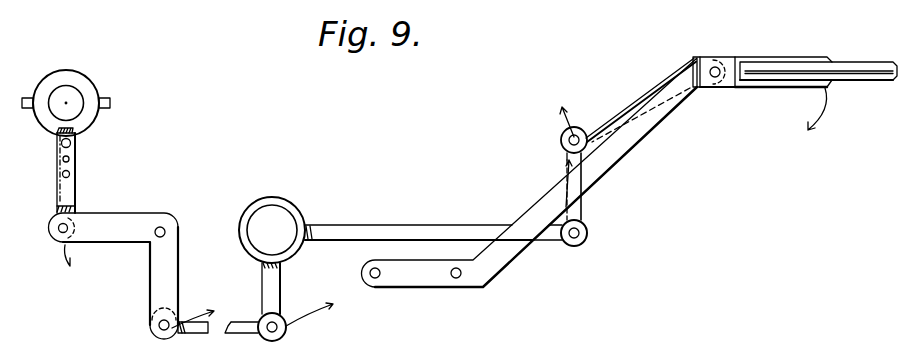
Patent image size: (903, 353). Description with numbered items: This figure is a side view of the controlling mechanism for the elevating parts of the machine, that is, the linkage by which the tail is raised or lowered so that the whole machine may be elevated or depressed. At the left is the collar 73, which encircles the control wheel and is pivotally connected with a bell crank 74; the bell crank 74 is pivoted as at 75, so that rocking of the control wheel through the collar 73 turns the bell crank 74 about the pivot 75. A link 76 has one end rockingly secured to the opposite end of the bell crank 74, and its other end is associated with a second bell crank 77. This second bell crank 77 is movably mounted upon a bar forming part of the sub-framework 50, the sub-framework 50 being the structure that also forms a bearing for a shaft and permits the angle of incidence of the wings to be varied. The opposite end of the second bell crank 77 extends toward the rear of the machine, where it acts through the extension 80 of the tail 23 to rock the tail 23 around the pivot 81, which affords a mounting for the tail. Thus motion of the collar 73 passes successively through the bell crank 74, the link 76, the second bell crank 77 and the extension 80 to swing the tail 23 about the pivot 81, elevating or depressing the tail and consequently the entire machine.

The collar 73 is at (44, 87).
The bell crank 74 is at (127, 221).
The pivot 75 is at (168, 230).
The link 76 is at (233, 336).
The second bell crank 77 is at (287, 208).
The sub-framework 50 is at (502, 257).
The extension 80 is at (618, 114).
The pivot 81 is at (717, 64).
The tail 23 is at (838, 63).